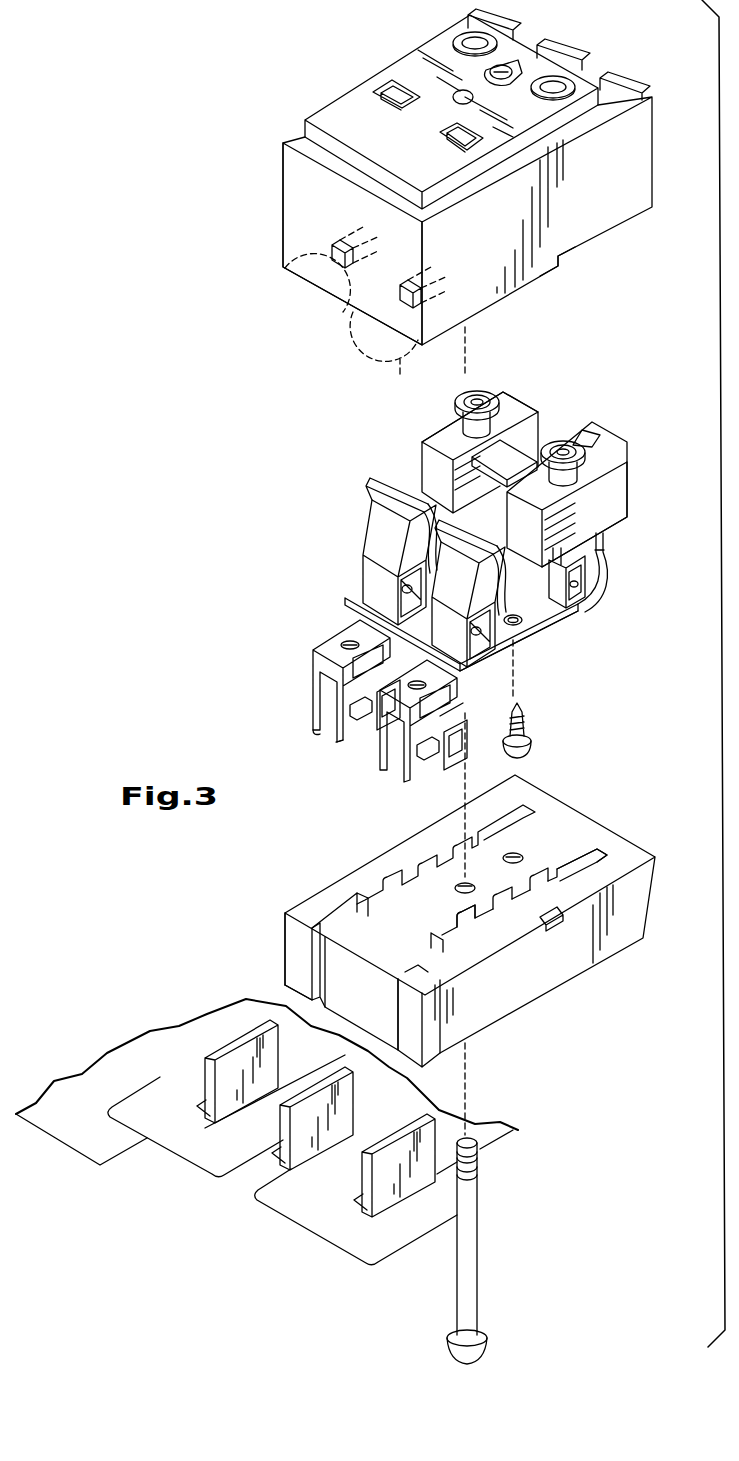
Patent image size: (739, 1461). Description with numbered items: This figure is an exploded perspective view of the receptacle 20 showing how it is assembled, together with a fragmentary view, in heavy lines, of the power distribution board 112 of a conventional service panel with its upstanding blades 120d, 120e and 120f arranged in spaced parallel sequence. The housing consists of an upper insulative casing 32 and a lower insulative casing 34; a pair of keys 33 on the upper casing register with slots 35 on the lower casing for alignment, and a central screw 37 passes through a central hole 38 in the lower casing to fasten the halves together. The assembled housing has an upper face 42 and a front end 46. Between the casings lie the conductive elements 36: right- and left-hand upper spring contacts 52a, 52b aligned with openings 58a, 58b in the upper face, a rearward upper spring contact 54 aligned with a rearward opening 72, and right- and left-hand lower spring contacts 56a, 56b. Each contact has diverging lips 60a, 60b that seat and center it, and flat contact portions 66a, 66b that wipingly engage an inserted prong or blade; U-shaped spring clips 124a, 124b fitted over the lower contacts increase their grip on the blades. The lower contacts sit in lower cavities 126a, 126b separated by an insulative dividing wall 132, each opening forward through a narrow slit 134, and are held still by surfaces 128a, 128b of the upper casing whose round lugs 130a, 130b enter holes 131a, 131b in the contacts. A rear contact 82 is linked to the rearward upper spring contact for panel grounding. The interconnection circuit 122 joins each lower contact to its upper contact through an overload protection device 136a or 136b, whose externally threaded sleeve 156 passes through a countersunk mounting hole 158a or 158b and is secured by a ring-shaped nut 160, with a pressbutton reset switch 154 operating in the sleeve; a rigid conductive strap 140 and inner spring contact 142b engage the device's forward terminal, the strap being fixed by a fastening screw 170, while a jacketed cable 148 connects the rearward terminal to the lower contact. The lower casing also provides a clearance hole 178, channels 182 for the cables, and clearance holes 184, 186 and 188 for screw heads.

The receptacle 20 is at (606, 1022).
The upper insulative casing 32 is at (655, 138).
The keys 33 is at (550, 281).
The lower insulative casing 34 is at (640, 920).
The slots 35 is at (548, 926).
The conductive elements 36 is at (318, 797).
The central screw 37 is at (478, 1273).
The central hole 38 is at (463, 895).
The upper face 42 is at (343, 113).
The front end 46 is at (310, 218).
The right-hand upper spring contact 52a is at (364, 531).
The left-hand upper spring contact 52b is at (431, 575).
The rearward upper spring contact 54 is at (522, 452).
The right-hand lower spring contact 56a is at (310, 662).
The left-hand lower spring contact 56b is at (367, 714).
The right-hand opening 58a is at (398, 86).
The left-hand opening 58b is at (462, 154).
The diverging lip 60a is at (375, 505).
The diverging lip 60b is at (405, 478).
The flat contact portion 66a is at (316, 718).
The flat contact portion 66b is at (336, 716).
The rearward opening 72 is at (506, 66).
The rear contact 82 is at (630, 442).
The power distribution board 112 is at (492, 1135).
The upstanding blade 120d is at (215, 1048).
The upstanding blade 120e is at (283, 1140).
The upstanding blade 120f is at (360, 1178).
The interconnection circuit 122 is at (548, 634).
The spring clip 124a is at (362, 723).
The spring clip 124b is at (440, 762).
The lower cavity 126a is at (340, 914).
The lower cavity 126b is at (445, 976).
The surface 128a is at (330, 255).
The surface 128b is at (400, 310).
The round lug 130a is at (340, 316).
The round lug 130b is at (400, 360).
The hole 131a is at (348, 643).
The hole 131b is at (417, 683).
The insulative dividing wall 132 is at (378, 935).
The narrow slit 134 is at (316, 957).
The overload protection device 136a is at (522, 420).
The overload protection device 136b is at (632, 490).
The rigid conductive strap 140 is at (478, 693).
The inner spring contact 142b is at (581, 578).
The jacketed cable 148 is at (601, 606).
The pressbutton reset switch 154 is at (484, 394).
The externally threaded sleeve 156 is at (572, 470).
The mounting hole 158a is at (470, 40).
The mounting hole 158b is at (557, 84).
The ring-shaped nut 160 is at (455, 406).
The fastening screw 170 is at (533, 747).
The clearance hole 178 is at (520, 858).
The channel 182 is at (598, 850).
The clearance hole 184 is at (467, 922).
The clearance hole 186 is at (560, 890).
The clearance hole 188 is at (513, 908).